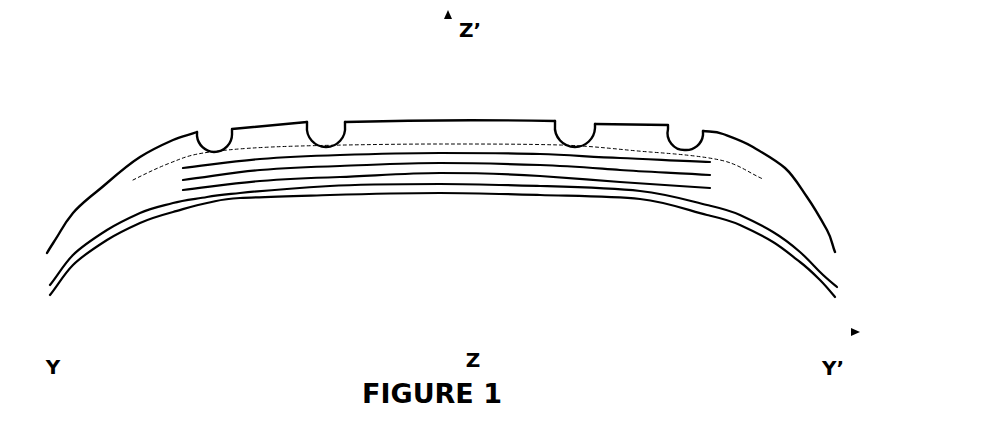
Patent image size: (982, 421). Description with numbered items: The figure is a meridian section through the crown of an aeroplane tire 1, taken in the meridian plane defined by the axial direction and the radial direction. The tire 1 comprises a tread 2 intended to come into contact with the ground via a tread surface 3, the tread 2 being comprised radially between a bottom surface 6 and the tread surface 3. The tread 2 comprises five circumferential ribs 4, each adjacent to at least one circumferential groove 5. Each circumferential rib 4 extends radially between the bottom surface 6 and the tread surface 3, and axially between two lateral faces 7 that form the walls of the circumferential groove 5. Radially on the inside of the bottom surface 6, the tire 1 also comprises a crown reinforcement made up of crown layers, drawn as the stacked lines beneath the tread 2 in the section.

The tire 1 is at (87, 136).
The tread 2 is at (740, 150).
The tread surface 3 is at (450, 96).
The circumferential rib 4 is at (414, 124).
The circumferential groove 5 is at (573, 120).
The bottom surface 6 is at (760, 163).
The lateral face 7 is at (329, 120).